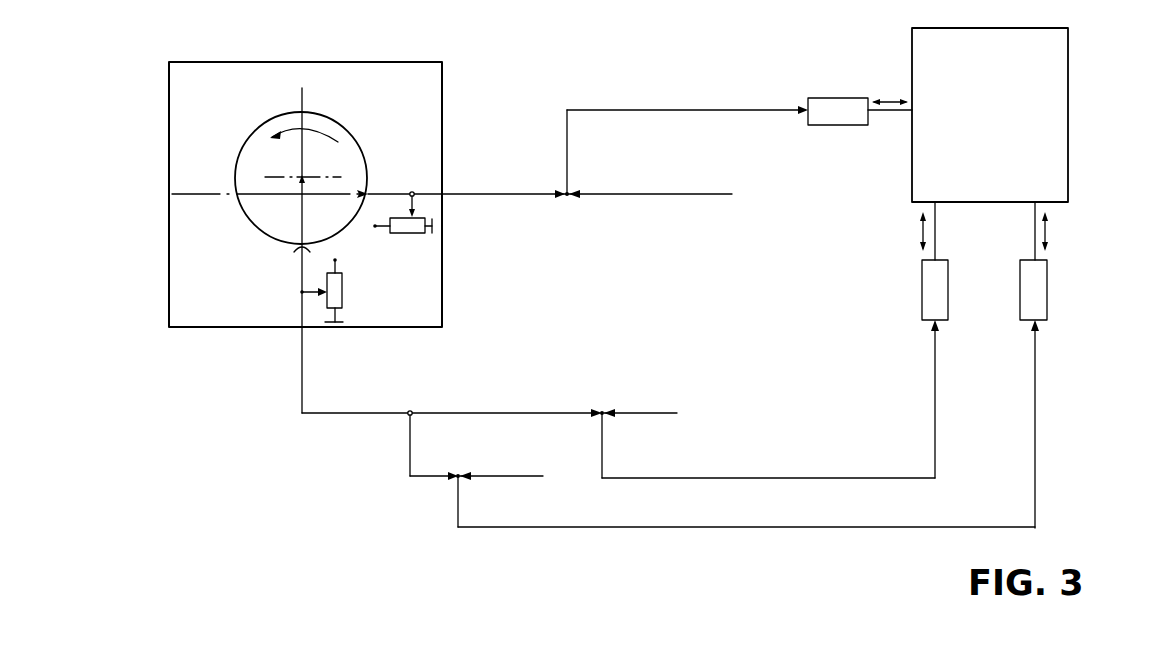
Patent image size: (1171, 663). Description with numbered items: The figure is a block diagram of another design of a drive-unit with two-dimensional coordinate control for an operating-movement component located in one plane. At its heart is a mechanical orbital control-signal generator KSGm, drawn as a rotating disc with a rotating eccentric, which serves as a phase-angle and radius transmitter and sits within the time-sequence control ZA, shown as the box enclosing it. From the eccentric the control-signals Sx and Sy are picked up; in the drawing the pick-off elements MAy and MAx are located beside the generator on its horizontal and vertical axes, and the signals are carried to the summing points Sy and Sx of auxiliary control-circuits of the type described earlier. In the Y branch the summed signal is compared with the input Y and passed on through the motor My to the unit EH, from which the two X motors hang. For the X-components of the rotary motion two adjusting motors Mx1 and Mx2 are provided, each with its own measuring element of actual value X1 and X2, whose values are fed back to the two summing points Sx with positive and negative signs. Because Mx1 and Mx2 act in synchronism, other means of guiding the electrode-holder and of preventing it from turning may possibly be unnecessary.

The time-sequence control ZA is at (411, 102).
The mechanical orbital control-signal generator KSGm is at (277, 223).
The y-axis measuring transducer MAy is at (467, 195).
The x-axis measuring transducer MAx is at (353, 290).
The control-signal Sy is at (667, 171).
The y setpoint input Y is at (649, 211).
The y-axis motor My is at (860, 95).
The adjusting unit EH is at (1052, 105).
The adjusting motor Mx1 is at (914, 340).
The adjusting motor Mx2 is at (1063, 365).
The control-signal Sx is at (668, 453).
The measuring element of actual value X1 is at (640, 398).
The measuring element of actual value X2 is at (501, 461).